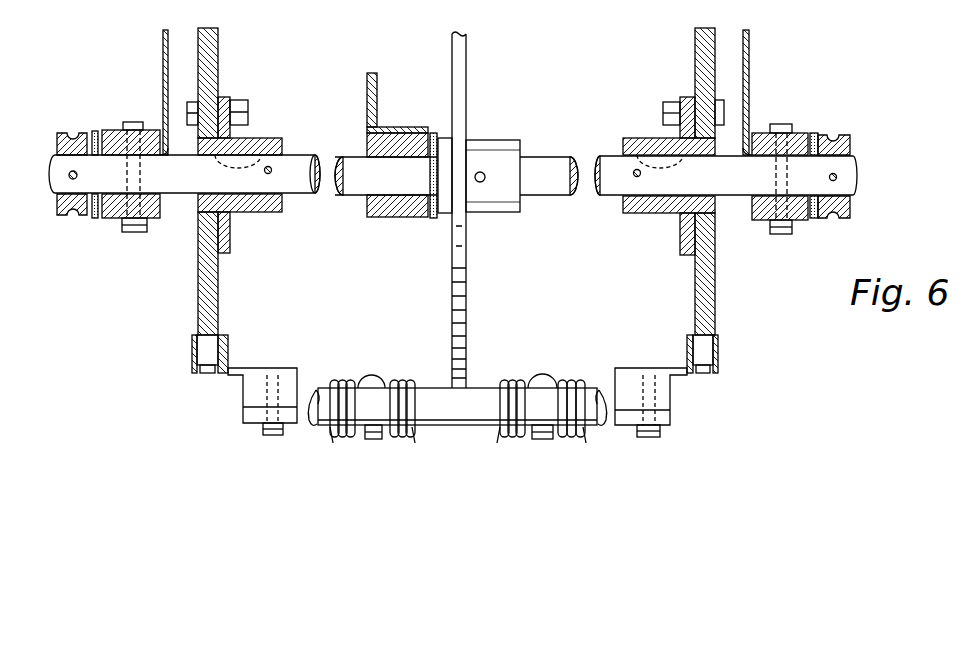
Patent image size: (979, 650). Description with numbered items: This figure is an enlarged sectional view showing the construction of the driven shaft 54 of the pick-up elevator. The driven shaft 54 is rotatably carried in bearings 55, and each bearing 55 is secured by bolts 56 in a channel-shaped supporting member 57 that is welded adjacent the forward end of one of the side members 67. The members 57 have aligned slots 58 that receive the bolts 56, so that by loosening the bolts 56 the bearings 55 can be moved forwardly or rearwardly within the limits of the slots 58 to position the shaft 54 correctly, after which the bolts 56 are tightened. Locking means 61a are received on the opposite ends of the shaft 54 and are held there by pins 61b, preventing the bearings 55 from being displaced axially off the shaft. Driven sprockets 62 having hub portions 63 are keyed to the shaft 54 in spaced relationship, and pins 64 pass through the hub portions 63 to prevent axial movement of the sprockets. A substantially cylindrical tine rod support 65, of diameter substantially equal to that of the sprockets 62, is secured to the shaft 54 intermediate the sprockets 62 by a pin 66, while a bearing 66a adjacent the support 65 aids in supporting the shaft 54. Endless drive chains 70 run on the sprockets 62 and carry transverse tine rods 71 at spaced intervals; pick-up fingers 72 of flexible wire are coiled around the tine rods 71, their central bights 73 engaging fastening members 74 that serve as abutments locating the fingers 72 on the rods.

The driven shaft 54 is at (571, 152).
The bearings 55 is at (125, 218).
The bolts 56 is at (140, 122).
The channel-shaped supporting members 57 is at (112, 213).
The slots 58 is at (120, 128).
The locking means 61a is at (70, 140).
The pins 61b is at (70, 173).
The driven sprockets 62 is at (210, 42).
The hub portions 63 is at (262, 140).
The pins 64 is at (270, 168).
The tine rod support 65 is at (462, 57).
The pin 66 is at (483, 173).
The bearing 66a is at (398, 212).
The side members 67 is at (167, 36).
The endless drive chains 70 is at (192, 358).
The tine rods 71 is at (477, 398).
The pick-up fingers 72 is at (600, 443).
The bights 73 is at (395, 380).
The fastening members 74 is at (374, 385).